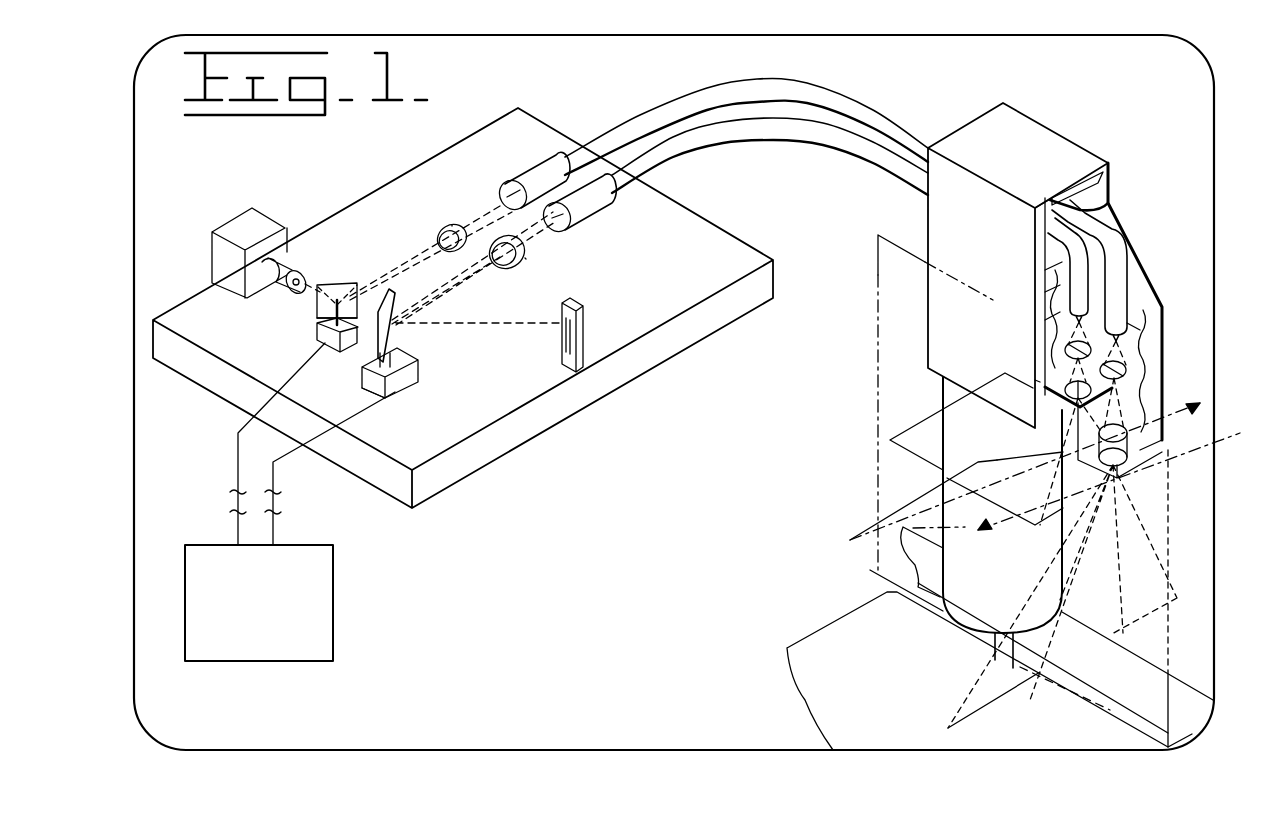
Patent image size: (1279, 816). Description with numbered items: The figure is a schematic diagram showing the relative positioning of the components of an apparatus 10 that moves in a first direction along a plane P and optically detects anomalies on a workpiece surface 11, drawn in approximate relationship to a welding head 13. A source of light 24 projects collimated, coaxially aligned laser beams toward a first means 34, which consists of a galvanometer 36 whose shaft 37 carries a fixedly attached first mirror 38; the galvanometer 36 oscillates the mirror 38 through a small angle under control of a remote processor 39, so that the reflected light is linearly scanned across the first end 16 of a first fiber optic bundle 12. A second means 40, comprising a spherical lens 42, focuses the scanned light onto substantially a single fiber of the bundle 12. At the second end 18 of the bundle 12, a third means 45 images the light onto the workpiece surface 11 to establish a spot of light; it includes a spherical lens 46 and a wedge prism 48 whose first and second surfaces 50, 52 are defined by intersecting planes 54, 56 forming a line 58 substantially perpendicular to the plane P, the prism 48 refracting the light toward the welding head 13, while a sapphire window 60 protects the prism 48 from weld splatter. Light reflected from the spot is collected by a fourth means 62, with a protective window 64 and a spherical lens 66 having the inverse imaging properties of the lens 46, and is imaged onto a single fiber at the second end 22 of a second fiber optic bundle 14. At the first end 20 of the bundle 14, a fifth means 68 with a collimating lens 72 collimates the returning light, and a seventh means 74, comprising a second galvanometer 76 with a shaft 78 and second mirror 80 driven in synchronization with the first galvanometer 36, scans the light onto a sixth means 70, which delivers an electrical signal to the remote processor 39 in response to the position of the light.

The apparatus 10 is at (1215, 88).
The workpiece surface 11 is at (875, 661).
The first fiber optic bundle 12 is at (638, 116).
The welding head 13 is at (1098, 143).
The second fiber optic bundle 14 is at (694, 142).
The first end of first fiber optic bundle 16 is at (514, 184).
The second end of first fiber optic bundle 18 is at (1155, 330).
The first end of second fiber optic bundle 20 is at (566, 224).
The second end of second fiber optic bundle 22 is at (1062, 313).
The source of light 24 is at (258, 227).
The first means 34 is at (357, 262).
The galvanometer 36 is at (320, 338).
The galvanometer shaft 37 is at (333, 308).
The first mirror 38 is at (338, 282).
The remote processor 39 is at (272, 608).
The second means 40 is at (451, 212).
The spherical lens 42 is at (446, 224).
The third means 45 is at (1160, 366).
The spherical lens 46 is at (1125, 368).
The wedge prism 48 is at (1140, 449).
The first surface of wedge prism 50 is at (1090, 431).
The second surface of wedge prism 52 is at (1148, 470).
The first plane 54 is at (925, 414).
The second plane 56 is at (911, 508).
The line of intersection 58 is at (1010, 504).
The window 60 is at (1063, 469).
The fourth means 62 is at (1035, 361).
The protective window 64 is at (1062, 391).
The spherical lens 66 is at (1068, 343).
The fifth means 68 is at (538, 264).
The sixth means 70 is at (560, 368).
The collimating lens 72 is at (520, 265).
The seventh means 74 is at (420, 398).
The second galvanometer 76 is at (397, 396).
The shaft of second galvanometer 78 is at (408, 350).
The second mirror 80 is at (362, 350).
The plane P is at (880, 278).